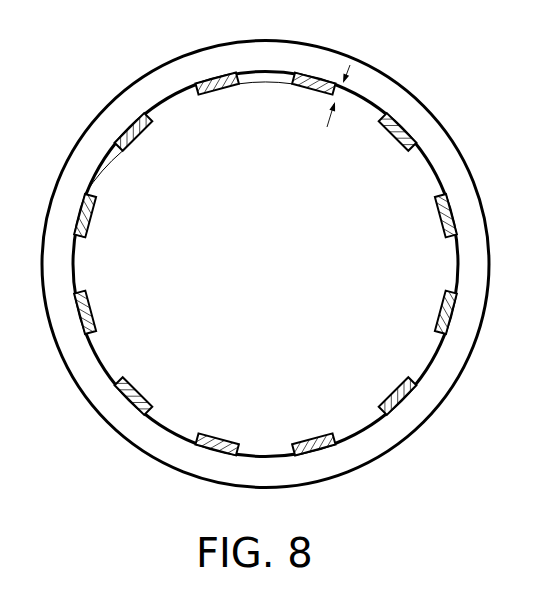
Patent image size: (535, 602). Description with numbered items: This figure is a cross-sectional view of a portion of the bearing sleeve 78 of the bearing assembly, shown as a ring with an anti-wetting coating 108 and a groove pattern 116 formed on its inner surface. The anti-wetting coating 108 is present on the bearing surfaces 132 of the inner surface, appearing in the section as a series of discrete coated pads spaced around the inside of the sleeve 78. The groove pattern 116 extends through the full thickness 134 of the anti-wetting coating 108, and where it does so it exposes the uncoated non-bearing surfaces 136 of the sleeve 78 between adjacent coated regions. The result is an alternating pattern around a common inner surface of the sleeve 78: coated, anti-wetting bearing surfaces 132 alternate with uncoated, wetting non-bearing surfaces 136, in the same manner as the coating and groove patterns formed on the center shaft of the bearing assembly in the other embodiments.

The sleeve 78 is at (82, 137).
The anti-wetting coating 108 is at (210, 77).
The groove pattern 116 is at (185, 110).
The bearing surfaces 132 is at (304, 83).
The thickness 134 is at (346, 98).
The non-bearing surfaces 136 is at (99, 171).